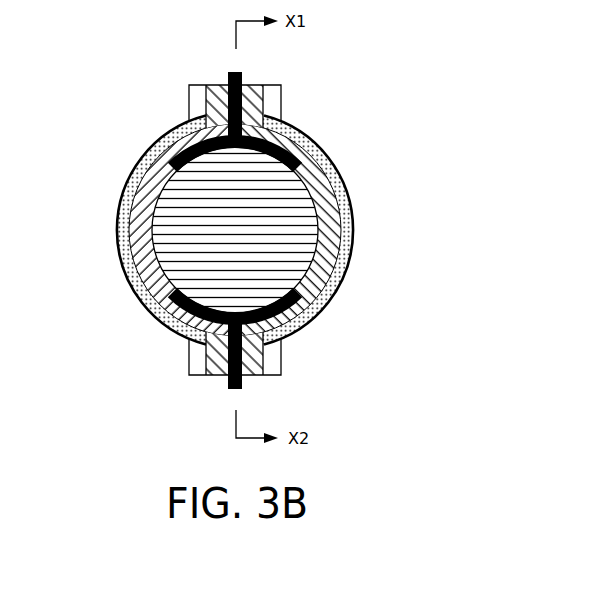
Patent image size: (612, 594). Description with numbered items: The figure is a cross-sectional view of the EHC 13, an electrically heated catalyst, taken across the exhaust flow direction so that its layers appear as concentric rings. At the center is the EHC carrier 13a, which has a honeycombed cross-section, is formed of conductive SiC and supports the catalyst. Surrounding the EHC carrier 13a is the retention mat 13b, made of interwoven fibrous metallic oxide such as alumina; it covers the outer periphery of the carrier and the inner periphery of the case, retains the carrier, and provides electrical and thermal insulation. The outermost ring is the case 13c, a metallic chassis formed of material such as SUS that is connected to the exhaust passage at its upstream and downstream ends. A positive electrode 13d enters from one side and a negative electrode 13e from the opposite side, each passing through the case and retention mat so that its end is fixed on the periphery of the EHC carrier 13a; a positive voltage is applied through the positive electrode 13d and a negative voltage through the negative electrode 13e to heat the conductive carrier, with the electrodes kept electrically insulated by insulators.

The EHC 13 is at (306, 297).
The EHC carrier 13a is at (180, 234).
The retention mat 13b is at (338, 213).
The case 13c is at (320, 154).
The positive electrode 13d is at (228, 73).
The negative electrode 13e is at (228, 384).